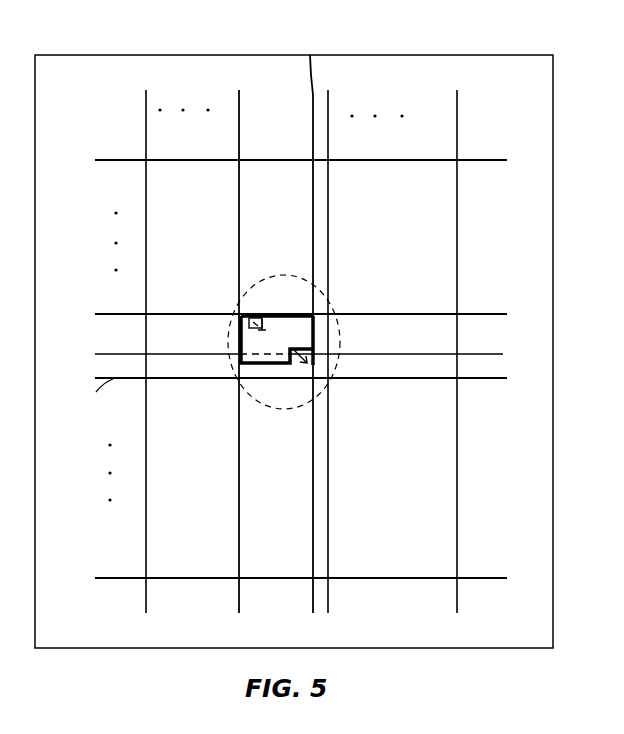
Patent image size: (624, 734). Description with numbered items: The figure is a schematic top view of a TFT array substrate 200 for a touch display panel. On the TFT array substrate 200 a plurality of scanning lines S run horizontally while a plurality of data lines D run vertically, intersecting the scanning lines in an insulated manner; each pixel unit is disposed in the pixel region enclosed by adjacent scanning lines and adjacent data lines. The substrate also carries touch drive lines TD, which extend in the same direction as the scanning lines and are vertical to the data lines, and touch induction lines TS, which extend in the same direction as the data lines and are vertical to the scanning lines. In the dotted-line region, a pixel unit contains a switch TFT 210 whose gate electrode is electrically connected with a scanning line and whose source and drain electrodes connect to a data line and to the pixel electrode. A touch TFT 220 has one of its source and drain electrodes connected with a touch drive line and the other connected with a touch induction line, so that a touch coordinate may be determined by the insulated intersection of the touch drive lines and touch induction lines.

The TFT array substrate 200 is at (468, 72).
The switch TFT 210 is at (247, 314).
The touch TFT 220 is at (305, 363).